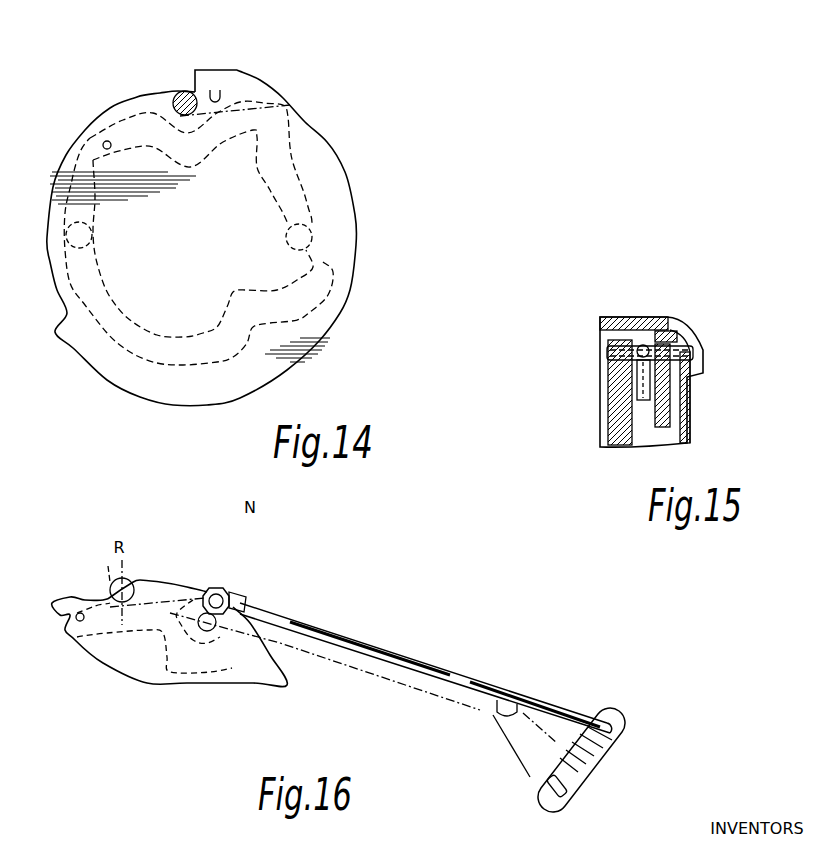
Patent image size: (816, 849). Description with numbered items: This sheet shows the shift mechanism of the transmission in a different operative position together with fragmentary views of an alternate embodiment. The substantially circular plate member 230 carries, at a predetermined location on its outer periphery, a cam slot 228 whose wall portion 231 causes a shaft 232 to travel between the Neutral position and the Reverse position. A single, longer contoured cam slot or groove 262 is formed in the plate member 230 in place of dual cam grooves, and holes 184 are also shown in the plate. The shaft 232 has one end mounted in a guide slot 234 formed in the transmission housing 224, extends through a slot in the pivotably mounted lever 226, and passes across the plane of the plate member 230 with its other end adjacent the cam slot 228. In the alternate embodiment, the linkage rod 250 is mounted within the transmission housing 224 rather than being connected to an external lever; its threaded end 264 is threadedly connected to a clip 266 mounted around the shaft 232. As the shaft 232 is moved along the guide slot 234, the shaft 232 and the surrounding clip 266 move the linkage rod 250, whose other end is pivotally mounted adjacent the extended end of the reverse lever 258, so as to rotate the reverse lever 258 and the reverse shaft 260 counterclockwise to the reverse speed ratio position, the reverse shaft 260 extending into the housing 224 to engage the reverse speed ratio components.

In FIG. 14, the hole 184 is at (92, 231).
In FIG. 15, the transmission housing 224 is at (627, 320).
In FIG. 15, the lever 226 is at (667, 415).
In FIG. 16, the cam slot 228 is at (210, 630).
In FIG. 14, the circular plate member 230 is at (318, 148).
In FIG. 15, the circular plate member 230 is at (617, 425).
In FIG. 16, the circular plate member 230 is at (285, 675).
In FIG. 16, the wall portion 231 is at (215, 587).
In FIG. 14, the shaft 232 is at (180, 93).
In FIG. 15, the shaft 232 is at (608, 351).
In FIG. 16, the shaft 232 is at (226, 530).
In FIG. 14, the guide slot 234 is at (217, 92).
In FIG. 15, the guide slot 234 is at (697, 347).
In FIG. 16, the guide slot 234 is at (180, 613).
In FIG. 15, the linkage rod 250 is at (650, 375).
In FIG. 16, the linkage rod 250 is at (437, 670).
In FIG. 16, the reverse lever 258 is at (607, 752).
In FIG. 16, the reverse shaft 260 is at (547, 787).
In FIG. 14, the contoured cam slot or groove 262 is at (102, 142).
In FIG. 16, the contoured cam slot or groove 262 is at (74, 612).
In FIG. 16, the threaded end 264 is at (240, 603).
In FIG. 15, the clip 266 is at (640, 360).
In FIG. 16, the clip 266 is at (128, 580).